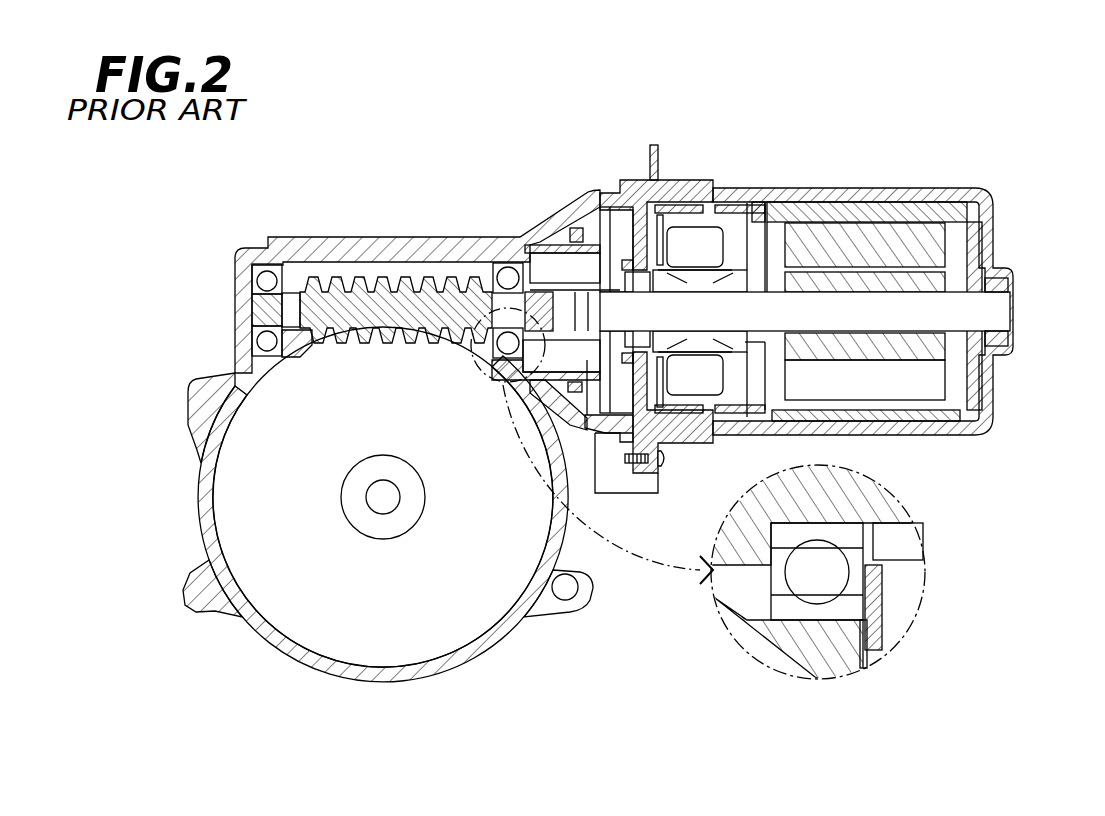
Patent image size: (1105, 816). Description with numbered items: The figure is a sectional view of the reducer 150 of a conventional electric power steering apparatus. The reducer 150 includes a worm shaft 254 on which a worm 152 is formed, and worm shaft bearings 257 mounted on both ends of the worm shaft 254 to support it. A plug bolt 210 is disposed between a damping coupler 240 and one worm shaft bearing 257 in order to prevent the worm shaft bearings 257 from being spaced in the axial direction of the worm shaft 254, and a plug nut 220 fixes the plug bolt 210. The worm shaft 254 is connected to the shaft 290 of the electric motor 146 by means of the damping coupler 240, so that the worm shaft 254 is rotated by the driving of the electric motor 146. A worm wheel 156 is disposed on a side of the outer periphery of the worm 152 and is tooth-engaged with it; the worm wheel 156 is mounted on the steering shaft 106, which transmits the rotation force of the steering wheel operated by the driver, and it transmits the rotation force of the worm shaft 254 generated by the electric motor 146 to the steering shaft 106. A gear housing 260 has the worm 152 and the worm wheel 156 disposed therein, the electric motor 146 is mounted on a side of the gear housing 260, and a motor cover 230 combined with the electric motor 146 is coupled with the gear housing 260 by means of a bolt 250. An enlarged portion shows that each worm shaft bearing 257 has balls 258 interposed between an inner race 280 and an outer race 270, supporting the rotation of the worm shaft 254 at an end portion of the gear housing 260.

The reducer 150 is at (806, 256).
The electric motor 146 is at (812, 190).
The shaft 290 is at (856, 305).
The motor cover 230 is at (678, 180).
The plug nut 220 is at (562, 243).
The plug bolt 210 is at (572, 229).
The worm shaft bearing 257 is at (268, 282).
The worm 152 is at (318, 278).
The gear housing 260 is at (376, 240).
The worm shaft 254 is at (260, 308).
The bolt 250 is at (666, 458).
The damping coupler 240 is at (588, 415).
The steering shaft 106 is at (385, 500).
The worm wheel 156 is at (460, 625).
The inner race 280 is at (855, 537).
The balls 258 is at (837, 577).
The outer race 270 is at (855, 612).